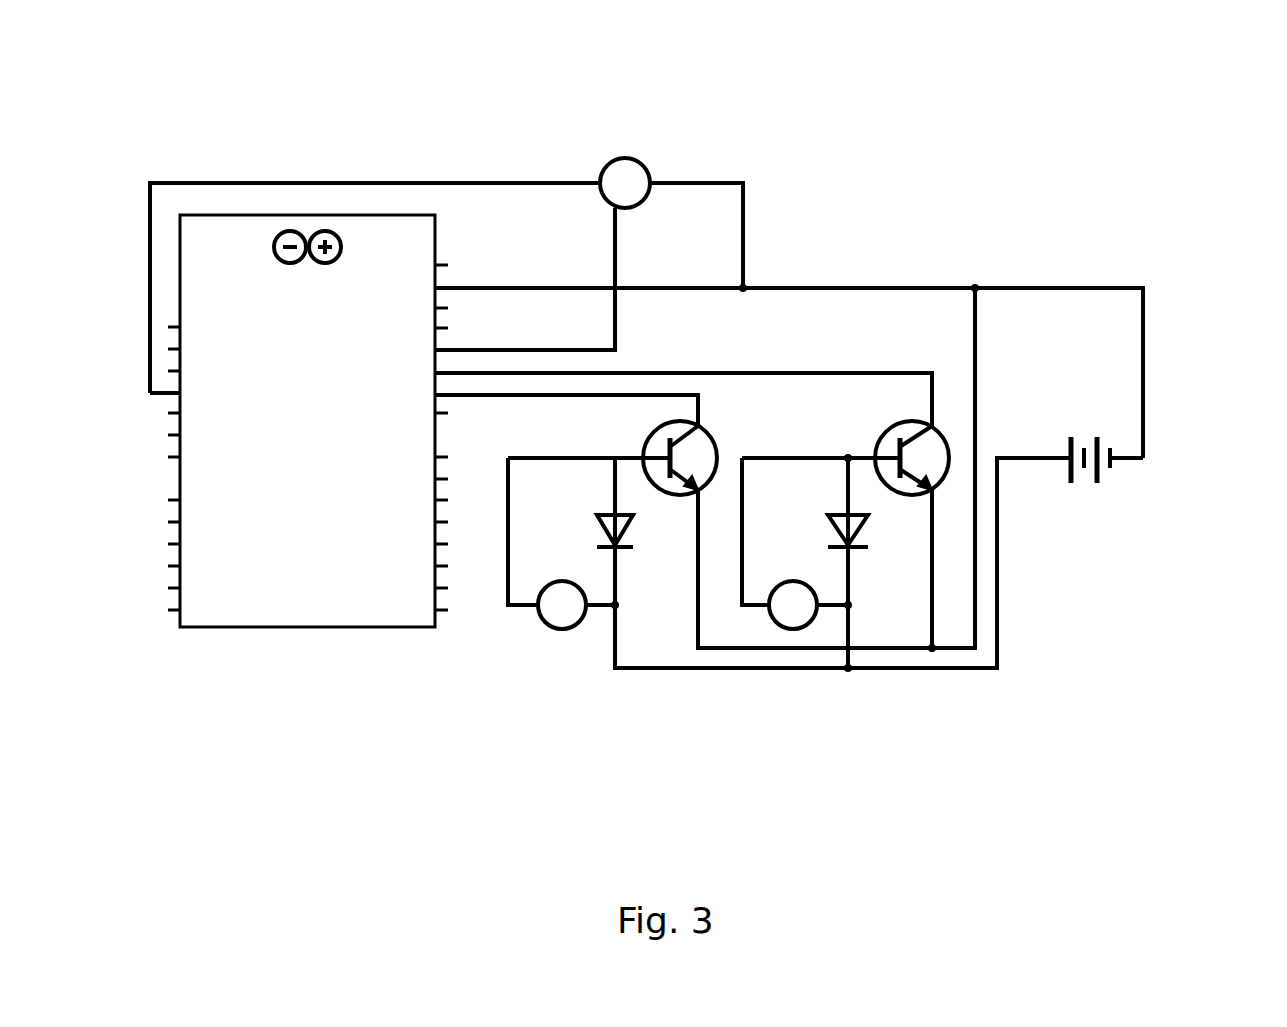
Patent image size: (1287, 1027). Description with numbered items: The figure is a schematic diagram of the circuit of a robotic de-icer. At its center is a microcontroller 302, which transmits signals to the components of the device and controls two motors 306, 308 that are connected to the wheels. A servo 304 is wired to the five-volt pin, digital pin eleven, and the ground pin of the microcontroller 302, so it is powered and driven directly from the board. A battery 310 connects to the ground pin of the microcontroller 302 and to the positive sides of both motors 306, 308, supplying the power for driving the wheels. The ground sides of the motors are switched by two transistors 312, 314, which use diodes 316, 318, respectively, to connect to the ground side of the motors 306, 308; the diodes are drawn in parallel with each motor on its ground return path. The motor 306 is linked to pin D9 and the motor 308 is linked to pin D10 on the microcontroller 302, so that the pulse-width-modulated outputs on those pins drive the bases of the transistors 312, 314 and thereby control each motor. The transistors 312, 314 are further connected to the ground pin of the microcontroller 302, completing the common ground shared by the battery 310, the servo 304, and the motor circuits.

The microcontroller 302 is at (173, 634).
The servo 304 is at (627, 158).
The motor 306 is at (560, 630).
The motor 308 is at (795, 630).
The battery 310 is at (1106, 482).
The transistor 312 is at (705, 430).
The transistor 314 is at (905, 425).
The diode 316 is at (625, 550).
The diode 318 is at (860, 550).